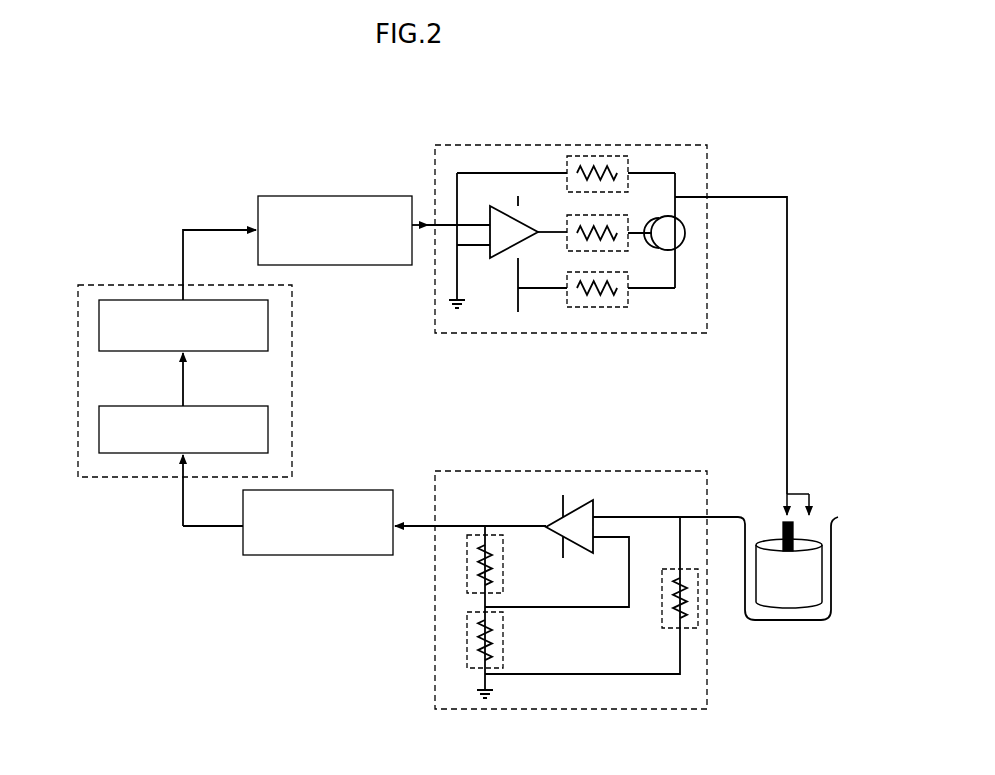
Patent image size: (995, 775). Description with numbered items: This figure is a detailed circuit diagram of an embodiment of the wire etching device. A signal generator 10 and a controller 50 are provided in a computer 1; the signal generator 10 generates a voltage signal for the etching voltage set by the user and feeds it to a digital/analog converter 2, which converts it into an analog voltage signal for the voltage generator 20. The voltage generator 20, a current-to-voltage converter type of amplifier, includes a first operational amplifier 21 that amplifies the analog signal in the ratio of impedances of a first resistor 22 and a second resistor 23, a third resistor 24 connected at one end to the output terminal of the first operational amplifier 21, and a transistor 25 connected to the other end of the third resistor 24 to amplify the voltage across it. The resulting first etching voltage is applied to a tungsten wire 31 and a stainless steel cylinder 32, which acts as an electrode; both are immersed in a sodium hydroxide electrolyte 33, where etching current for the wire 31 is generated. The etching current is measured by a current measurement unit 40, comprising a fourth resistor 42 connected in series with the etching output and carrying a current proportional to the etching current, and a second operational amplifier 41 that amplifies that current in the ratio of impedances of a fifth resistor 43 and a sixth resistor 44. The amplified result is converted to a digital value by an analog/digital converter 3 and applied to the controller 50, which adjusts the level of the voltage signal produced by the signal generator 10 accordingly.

The computer 1 is at (76, 308).
The digital/analog converter 2 is at (338, 196).
The analog/digital converter 3 is at (338, 490).
The signal generator 10 is at (270, 340).
The controller 50 is at (270, 442).
The voltage generator 20 is at (658, 145).
The first operational amplifier 21 is at (492, 258).
The first resistor 22 is at (615, 193).
The second resistor 23 is at (615, 307).
The third resistor 24 is at (615, 251).
The transistor 25 is at (686, 238).
The current measurement unit 40 is at (673, 471).
The second operational amplifier 41 is at (596, 548).
The fourth resistor 42 is at (698, 622).
The fifth resistor 43 is at (503, 578).
The sixth resistor 44 is at (503, 648).
The wire 31 is at (800, 530).
The stainless steel cylinder 32 is at (822, 571).
The electrolyte 33 is at (828, 601).